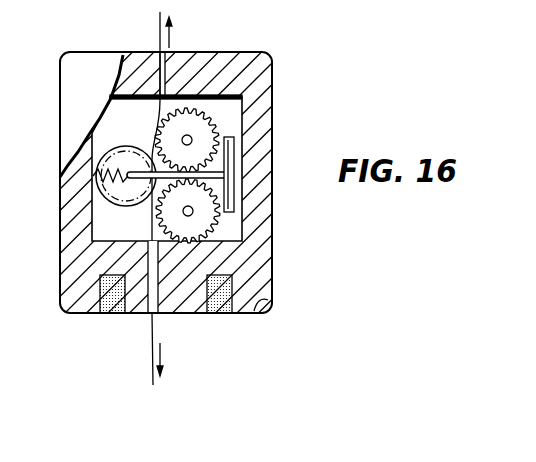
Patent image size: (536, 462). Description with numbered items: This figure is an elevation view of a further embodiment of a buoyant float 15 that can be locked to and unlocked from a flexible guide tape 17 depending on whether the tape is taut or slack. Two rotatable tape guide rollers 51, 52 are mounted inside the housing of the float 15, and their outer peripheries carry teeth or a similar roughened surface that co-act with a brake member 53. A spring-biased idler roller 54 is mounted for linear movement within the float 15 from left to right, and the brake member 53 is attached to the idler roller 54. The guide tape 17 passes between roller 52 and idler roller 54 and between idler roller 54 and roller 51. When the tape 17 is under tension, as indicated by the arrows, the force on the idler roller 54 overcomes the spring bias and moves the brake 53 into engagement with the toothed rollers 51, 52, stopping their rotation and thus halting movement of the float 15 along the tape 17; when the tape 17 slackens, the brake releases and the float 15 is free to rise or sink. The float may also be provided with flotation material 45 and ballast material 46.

The float 15 is at (272, 273).
The flexible guide tape 17 is at (160, 30).
The flotation material 45 is at (262, 313).
The ballast material 46 is at (222, 313).
The tape guide roller 51 is at (207, 220).
The tape guide roller 52 is at (241, 99).
The brake member 53 is at (233, 175).
The spring-biased idler roller 54 is at (131, 150).